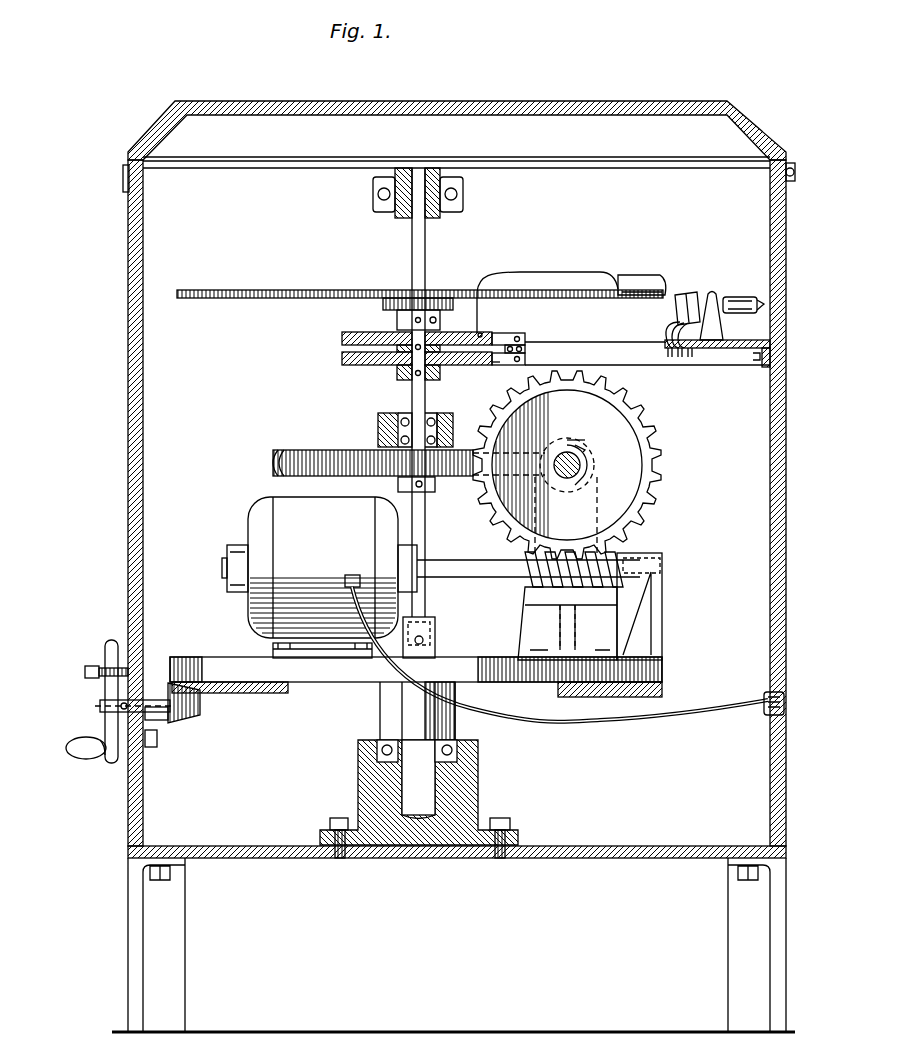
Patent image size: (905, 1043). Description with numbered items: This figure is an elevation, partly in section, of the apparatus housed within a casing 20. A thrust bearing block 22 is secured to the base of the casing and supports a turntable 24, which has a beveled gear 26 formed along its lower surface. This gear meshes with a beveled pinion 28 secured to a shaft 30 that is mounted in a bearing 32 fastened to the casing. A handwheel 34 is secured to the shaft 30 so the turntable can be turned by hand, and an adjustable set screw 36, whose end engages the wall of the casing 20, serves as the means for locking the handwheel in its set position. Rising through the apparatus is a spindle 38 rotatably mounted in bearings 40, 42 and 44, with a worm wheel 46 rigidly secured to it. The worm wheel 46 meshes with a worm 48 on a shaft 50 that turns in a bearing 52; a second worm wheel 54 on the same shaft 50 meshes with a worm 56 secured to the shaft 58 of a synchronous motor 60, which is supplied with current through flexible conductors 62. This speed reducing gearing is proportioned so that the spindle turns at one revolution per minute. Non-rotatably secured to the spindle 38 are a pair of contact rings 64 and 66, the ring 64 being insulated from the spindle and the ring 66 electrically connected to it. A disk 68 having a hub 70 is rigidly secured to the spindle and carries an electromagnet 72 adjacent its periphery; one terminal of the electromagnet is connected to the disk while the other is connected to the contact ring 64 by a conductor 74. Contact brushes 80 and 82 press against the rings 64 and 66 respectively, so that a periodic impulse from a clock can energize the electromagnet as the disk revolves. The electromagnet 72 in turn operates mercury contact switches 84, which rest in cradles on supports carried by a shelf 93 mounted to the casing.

The casing 20 is at (128, 804).
The thrust bearing block 22 is at (470, 800).
The turntable 24 is at (520, 690).
The beveled gear 26 is at (238, 693).
The beveled pinion 28 is at (195, 720).
The shaft 30 is at (100, 706).
The bearing 32 is at (160, 722).
The handwheel 34 is at (66, 748).
The adjustable set screw 36 is at (85, 671).
The spindle 38 is at (412, 254).
The bearing 40 is at (463, 198).
The bearing 42 is at (378, 428).
The bearing 44 is at (435, 632).
The worm wheel 46 is at (273, 465).
The worm 48 is at (590, 458).
The shaft 50 is at (582, 470).
The bearing 52 is at (580, 447).
The worm wheel 54 is at (650, 516).
The worm 56 is at (600, 560).
The motor shaft 58 is at (450, 560).
The synchronous motor 60 is at (288, 542).
The flexible conductors 62 is at (660, 718).
The contact ring 64 is at (342, 338).
The contact ring 66 is at (342, 358).
The disk 68 is at (304, 290).
The hub 70 is at (397, 318).
The electromagnet 72 is at (642, 275).
The conductor 74 is at (525, 273).
The contact brush 80 is at (500, 337).
The contact brush 82 is at (497, 365).
The mercury contact switch 84 is at (736, 297).
The shelf 93 is at (732, 348).